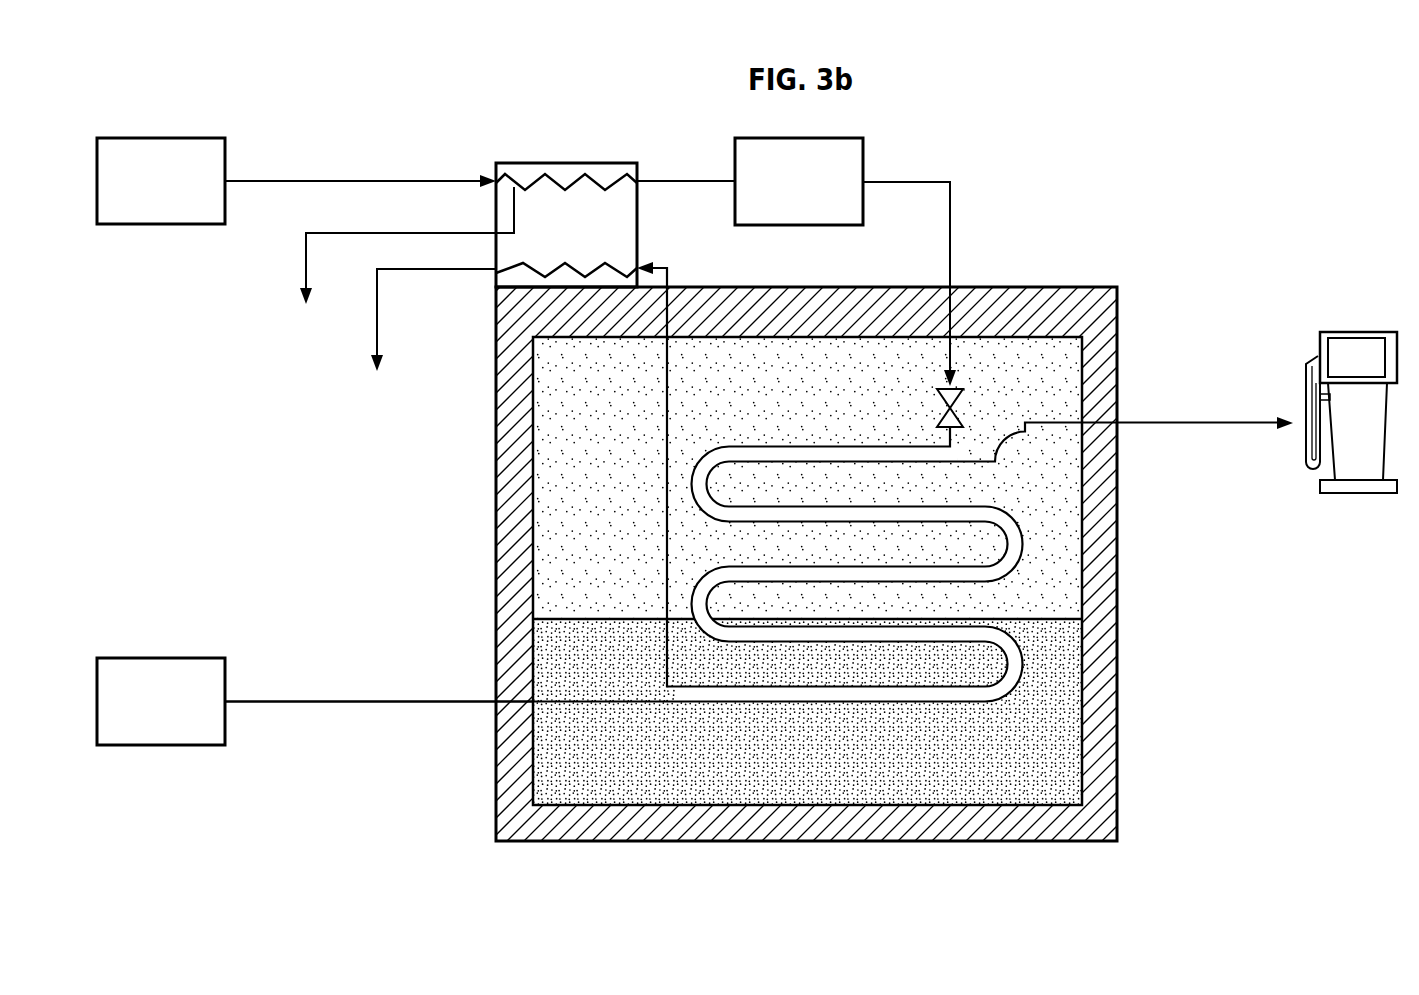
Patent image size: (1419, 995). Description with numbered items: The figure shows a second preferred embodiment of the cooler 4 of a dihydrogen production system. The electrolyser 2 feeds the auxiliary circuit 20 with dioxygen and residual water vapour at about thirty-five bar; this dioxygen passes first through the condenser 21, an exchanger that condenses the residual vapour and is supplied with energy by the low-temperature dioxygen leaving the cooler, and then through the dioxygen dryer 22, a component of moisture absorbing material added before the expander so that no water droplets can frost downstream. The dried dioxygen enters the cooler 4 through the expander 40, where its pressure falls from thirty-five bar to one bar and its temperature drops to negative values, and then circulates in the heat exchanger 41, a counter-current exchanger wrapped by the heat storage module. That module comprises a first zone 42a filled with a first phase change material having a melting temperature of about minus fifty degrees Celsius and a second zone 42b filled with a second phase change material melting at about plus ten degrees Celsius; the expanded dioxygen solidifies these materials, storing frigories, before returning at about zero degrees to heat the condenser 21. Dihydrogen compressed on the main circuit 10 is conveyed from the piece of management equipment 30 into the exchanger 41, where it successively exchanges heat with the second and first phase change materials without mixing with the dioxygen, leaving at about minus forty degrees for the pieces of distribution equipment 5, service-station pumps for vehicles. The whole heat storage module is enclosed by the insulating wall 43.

The electrolyser 2 is at (152, 194).
The auxiliary circuit 20 is at (249, 185).
The condenser 21 is at (553, 236).
The dioxygen dryer 22 is at (786, 194).
The cooler 4 is at (1174, 228).
The insulating wall 43 is at (600, 323).
The first zone 42a is at (628, 494).
The second zone 42b is at (628, 744).
The heat exchanger 41 is at (1022, 545).
The expander 40 is at (963, 408).
The piece of management equipment 30 is at (148, 711).
The main circuit 10 is at (251, 703).
The pieces of distribution equipment 5 is at (1356, 332).